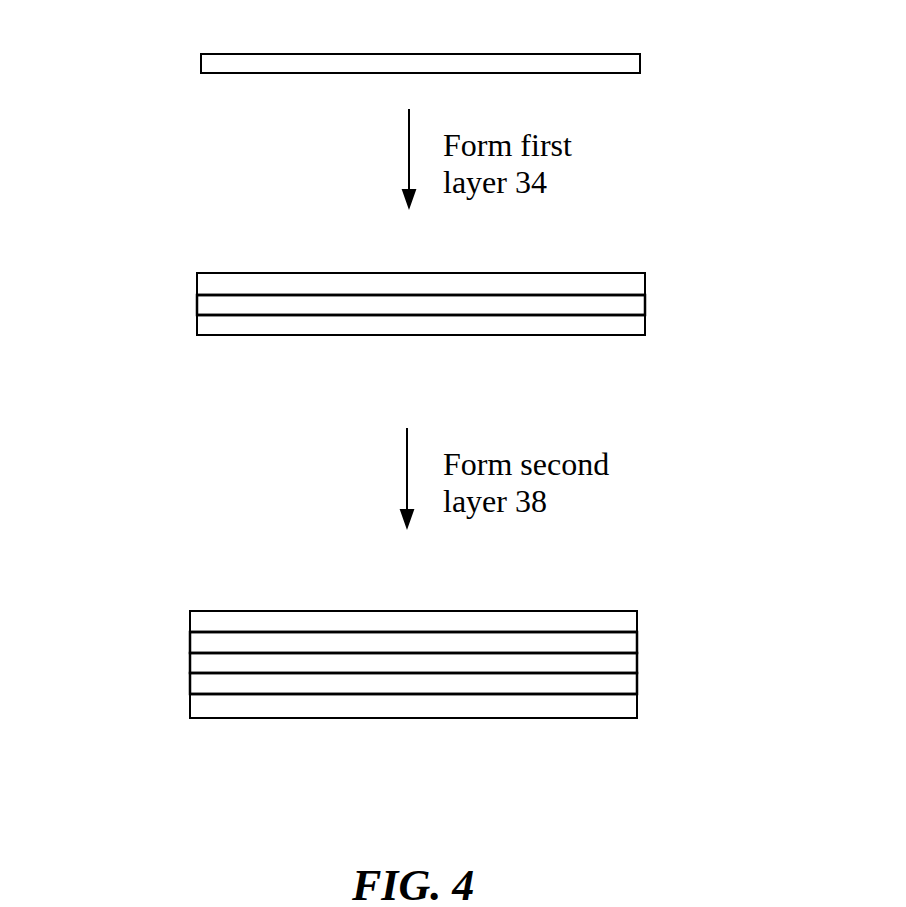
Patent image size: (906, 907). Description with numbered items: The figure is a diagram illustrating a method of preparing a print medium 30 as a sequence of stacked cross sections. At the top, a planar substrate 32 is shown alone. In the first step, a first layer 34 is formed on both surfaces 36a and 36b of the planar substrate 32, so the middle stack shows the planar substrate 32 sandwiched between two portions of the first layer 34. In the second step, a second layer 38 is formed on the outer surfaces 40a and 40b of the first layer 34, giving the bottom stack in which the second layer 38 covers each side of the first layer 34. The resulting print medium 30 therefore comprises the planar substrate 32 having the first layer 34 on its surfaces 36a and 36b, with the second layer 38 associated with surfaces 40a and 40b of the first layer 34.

The print medium 30 is at (160, 672).
The planar substrate 32 is at (643, 63).
The first layer 34 is at (197, 326).
The surface of planar substrate 36a is at (570, 293).
The surface of planar substrate 36b is at (540, 315).
The second layer 38 is at (270, 607).
The surface of first layer 40a is at (555, 632).
The surface of first layer 40b is at (547, 694).